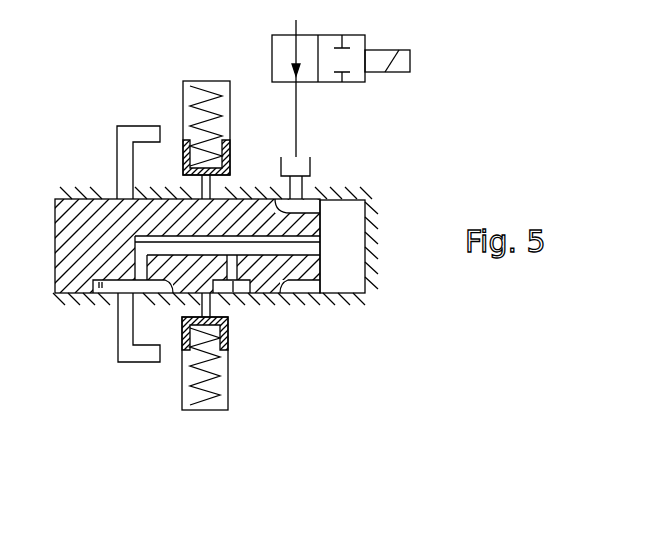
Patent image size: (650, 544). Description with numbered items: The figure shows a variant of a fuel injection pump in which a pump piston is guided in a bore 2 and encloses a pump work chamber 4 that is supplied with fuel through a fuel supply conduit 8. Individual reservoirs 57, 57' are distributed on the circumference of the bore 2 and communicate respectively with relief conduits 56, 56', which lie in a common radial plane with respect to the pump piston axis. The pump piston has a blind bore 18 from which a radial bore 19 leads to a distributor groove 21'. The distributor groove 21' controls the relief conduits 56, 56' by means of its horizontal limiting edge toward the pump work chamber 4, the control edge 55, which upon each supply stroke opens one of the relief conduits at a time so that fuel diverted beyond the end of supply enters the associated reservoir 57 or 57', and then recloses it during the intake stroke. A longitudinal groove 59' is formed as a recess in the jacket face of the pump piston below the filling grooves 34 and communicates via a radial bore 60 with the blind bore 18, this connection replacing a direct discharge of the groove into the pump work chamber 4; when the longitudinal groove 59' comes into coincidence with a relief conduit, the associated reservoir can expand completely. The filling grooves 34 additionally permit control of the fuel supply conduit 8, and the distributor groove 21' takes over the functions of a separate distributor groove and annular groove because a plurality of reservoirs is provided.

The bore 2 is at (93, 191).
The pump work chamber 4 is at (356, 210).
The fuel supply conduit 8 is at (302, 160).
The radial bore 19 is at (146, 256).
The blind bore 18 is at (300, 245).
The control edge 55 is at (153, 296).
The distributor groove 21' is at (104, 327).
The relief conduit 56' is at (236, 159).
The reservoir 57' is at (181, 102).
The relief conduit 56 is at (235, 323).
The reservoir 57 is at (178, 375).
The radial bore 60 is at (262, 285).
The longitudinal groove 59' is at (251, 329).
The filling grooves 34 is at (330, 298).